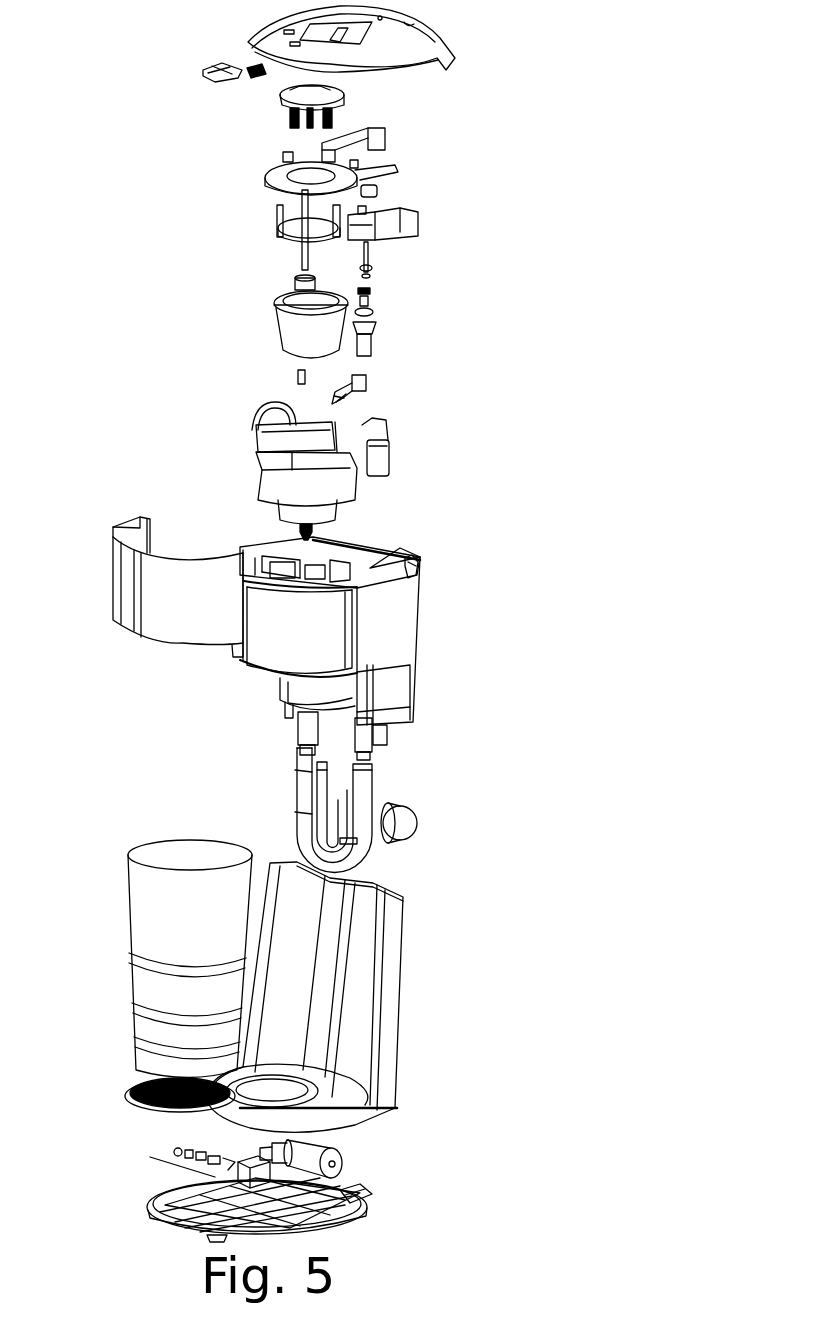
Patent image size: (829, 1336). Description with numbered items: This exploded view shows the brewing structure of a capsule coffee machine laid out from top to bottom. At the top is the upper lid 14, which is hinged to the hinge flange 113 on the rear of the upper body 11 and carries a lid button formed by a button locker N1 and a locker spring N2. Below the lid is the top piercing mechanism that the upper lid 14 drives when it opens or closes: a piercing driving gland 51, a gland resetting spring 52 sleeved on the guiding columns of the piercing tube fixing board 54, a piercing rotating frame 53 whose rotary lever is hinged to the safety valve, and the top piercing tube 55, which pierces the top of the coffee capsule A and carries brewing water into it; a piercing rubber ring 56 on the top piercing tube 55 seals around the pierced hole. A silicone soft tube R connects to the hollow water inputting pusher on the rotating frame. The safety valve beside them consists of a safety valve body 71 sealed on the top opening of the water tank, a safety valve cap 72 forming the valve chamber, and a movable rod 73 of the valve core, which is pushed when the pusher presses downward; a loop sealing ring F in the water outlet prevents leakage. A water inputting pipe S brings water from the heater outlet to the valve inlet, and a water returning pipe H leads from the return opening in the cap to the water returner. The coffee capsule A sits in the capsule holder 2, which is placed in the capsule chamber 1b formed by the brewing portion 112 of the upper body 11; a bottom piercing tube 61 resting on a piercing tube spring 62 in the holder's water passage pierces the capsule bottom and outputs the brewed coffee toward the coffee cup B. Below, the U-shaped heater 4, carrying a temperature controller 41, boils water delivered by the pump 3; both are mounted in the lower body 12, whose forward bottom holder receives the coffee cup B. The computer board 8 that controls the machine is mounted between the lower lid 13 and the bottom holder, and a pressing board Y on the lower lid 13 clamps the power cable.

The upper lid 14 is at (410, 32).
The button locker N1 is at (217, 68).
The locker spring N2 is at (250, 68).
The piercing driving gland 51 is at (278, 97).
The gland resetting spring 52 is at (292, 122).
The silicone soft tube R is at (390, 128).
The piercing rotating frame 53 is at (270, 180).
The loop sealing ring F is at (377, 191).
The piercing tube fixing board 54 is at (278, 233).
The top piercing tube 55 is at (300, 255).
The piercing rubber ring 56 is at (293, 283).
The safety valve body 71 is at (400, 230).
The movable rod 73 is at (367, 273).
The safety valve cap 72 is at (367, 347).
The coffee capsule A is at (290, 327).
The bottom piercing tube 61 is at (295, 375).
The water returning pipe H is at (367, 392).
The capsule holder 2 is at (250, 433).
The water inputting pipe S is at (390, 453).
The piercing tube spring 62 is at (312, 528).
The capsule chamber 1b is at (280, 563).
The hinge flange 113 is at (409, 560).
The upper body 11 is at (403, 642).
The brewing portion 112 is at (235, 655).
The heater 4 is at (307, 812).
The temperature controller 41 is at (403, 826).
The coffee cup B is at (152, 947).
The lower body 12 is at (387, 993).
The pump 3 is at (343, 1155).
The computer board 8 is at (150, 1157).
The lower lid 13 is at (147, 1200).
The pressing board Y is at (365, 1198).